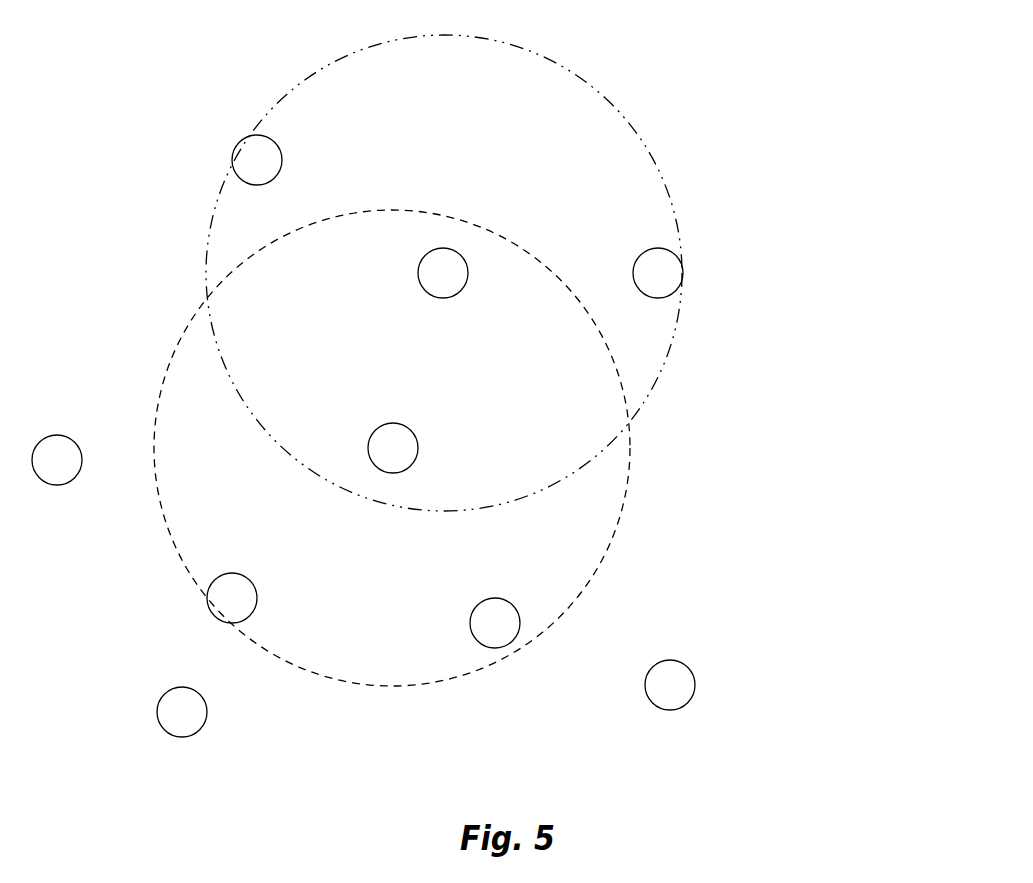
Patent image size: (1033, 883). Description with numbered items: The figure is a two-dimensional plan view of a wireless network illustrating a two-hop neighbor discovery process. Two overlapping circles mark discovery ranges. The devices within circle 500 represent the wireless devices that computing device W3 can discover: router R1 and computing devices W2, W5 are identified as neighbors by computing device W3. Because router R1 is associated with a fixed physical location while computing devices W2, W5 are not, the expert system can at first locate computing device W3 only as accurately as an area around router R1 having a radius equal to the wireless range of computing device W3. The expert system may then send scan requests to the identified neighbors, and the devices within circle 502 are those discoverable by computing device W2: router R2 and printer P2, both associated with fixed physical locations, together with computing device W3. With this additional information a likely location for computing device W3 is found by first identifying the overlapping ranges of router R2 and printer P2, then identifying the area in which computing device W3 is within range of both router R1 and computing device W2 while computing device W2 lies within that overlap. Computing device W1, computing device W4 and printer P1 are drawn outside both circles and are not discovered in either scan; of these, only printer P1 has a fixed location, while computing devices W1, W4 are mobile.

The circle 500 is at (622, 113).
The circle 502 is at (177, 545).
The router R1 is at (257, 160).
The router R2 is at (232, 598).
The computing device W1 is at (57, 460).
The computing device W2 is at (393, 448).
The computing device W3 is at (443, 273).
The computing device W4 is at (670, 685).
The computing device W5 is at (658, 273).
The printer P1 is at (182, 712).
The printer P2 is at (495, 623).